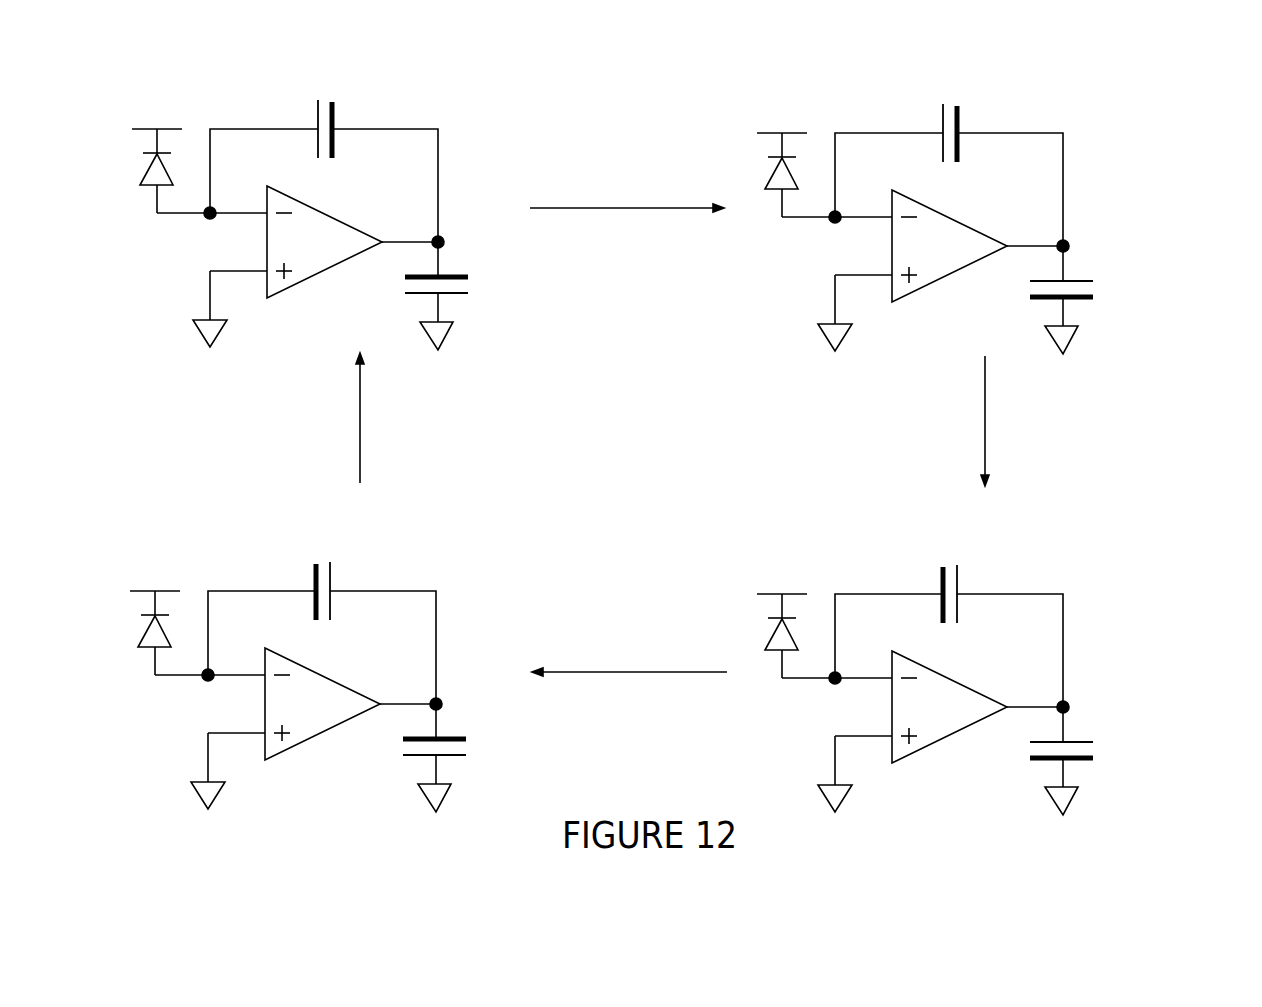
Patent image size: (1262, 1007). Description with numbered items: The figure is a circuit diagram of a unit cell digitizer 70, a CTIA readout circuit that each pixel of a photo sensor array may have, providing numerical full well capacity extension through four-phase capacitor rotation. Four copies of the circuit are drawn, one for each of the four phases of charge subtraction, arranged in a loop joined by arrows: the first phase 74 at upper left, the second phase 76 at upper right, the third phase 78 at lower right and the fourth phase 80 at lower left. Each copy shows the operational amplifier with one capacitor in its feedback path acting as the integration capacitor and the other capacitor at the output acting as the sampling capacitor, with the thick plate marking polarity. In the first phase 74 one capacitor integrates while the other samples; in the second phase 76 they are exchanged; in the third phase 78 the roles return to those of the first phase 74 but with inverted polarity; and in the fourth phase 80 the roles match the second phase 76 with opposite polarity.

The unit cell digitizer 70 is at (1217, 167).
The first phase 74 is at (494, 96).
The second phase 76 is at (937, 215).
The third phase 78 is at (937, 676).
The fourth phase 80 is at (310, 673).